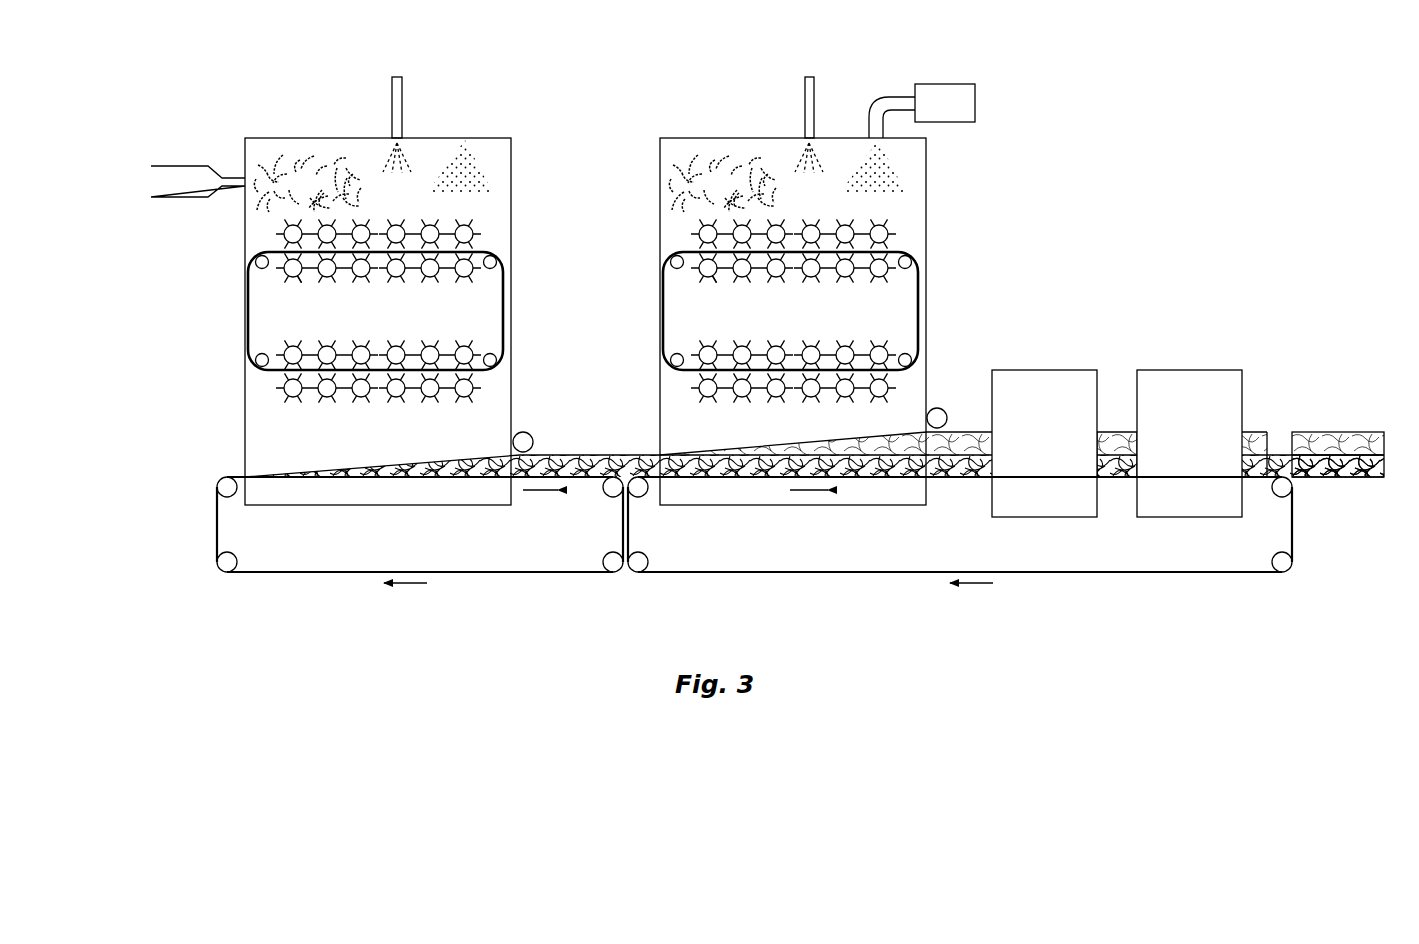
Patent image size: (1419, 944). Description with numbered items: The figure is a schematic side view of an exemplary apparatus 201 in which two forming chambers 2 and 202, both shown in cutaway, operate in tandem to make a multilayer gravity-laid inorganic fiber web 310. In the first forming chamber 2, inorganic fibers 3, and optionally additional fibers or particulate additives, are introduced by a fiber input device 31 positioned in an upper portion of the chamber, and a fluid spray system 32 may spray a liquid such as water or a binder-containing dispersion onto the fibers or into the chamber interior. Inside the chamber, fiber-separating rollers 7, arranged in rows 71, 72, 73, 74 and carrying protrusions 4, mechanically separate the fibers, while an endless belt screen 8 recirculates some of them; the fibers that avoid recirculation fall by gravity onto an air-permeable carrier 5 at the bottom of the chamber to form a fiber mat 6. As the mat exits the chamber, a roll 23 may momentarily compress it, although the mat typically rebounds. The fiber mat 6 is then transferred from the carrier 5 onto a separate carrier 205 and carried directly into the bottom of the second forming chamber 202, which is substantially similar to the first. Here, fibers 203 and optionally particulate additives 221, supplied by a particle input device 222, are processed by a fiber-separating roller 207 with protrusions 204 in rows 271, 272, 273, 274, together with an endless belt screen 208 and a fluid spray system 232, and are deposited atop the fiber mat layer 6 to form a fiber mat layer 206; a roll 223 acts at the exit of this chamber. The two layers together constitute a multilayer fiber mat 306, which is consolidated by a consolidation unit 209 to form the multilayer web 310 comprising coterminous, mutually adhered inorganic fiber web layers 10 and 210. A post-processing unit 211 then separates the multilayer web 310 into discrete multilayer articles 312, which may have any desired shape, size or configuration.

The forming chamber 2 is at (532, 154).
The inorganic fibers 3 is at (306, 150).
The protrusions 4 is at (299, 280).
The carrier 5 is at (214, 511).
The fiber mat 6 is at (572, 453).
The fiber-separating rollers 7 is at (284, 270).
The endless belt screen 8 is at (249, 336).
The inorganic fiber web layer 10 is at (1103, 480).
The roll 23 is at (512, 442).
The fiber input device 31 is at (175, 198).
The fluid spray system 32 is at (392, 93).
The row of rollers 71 is at (472, 231).
The row of rollers 72 is at (383, 279).
The row of rollers 73 is at (472, 353).
The row of rollers 74 is at (472, 387).
The apparatus 201 is at (1088, 84).
The forming chamber 202 is at (975, 184).
The fibers 203 is at (722, 150).
The protrusions 204 is at (714, 280).
The carrier 205 is at (761, 573).
The fiber mat layer 206 is at (979, 432).
The fiber-separating roller 207 is at (699, 270).
The endless belt screen 208 is at (664, 336).
The consolidation unit 209 is at (1044, 378).
The inorganic fiber web layer 210 is at (1110, 440).
The post-processing unit 211 is at (1195, 378).
The particulate additives 221 is at (884, 163).
The particle input device 222 is at (884, 100).
The roll 223 is at (926, 420).
The fluid spray system 232 is at (805, 83).
The row of rollers 271 is at (887, 231).
The row of rollers 272 is at (794, 279).
The row of rollers 273 is at (887, 353).
The row of rollers 274 is at (887, 387).
The multilayer fiber mat 306 is at (960, 486).
The multilayer gravity-laid inorganic fiber web 310 is at (1117, 486).
The multilayer articles 312 is at (1356, 399).